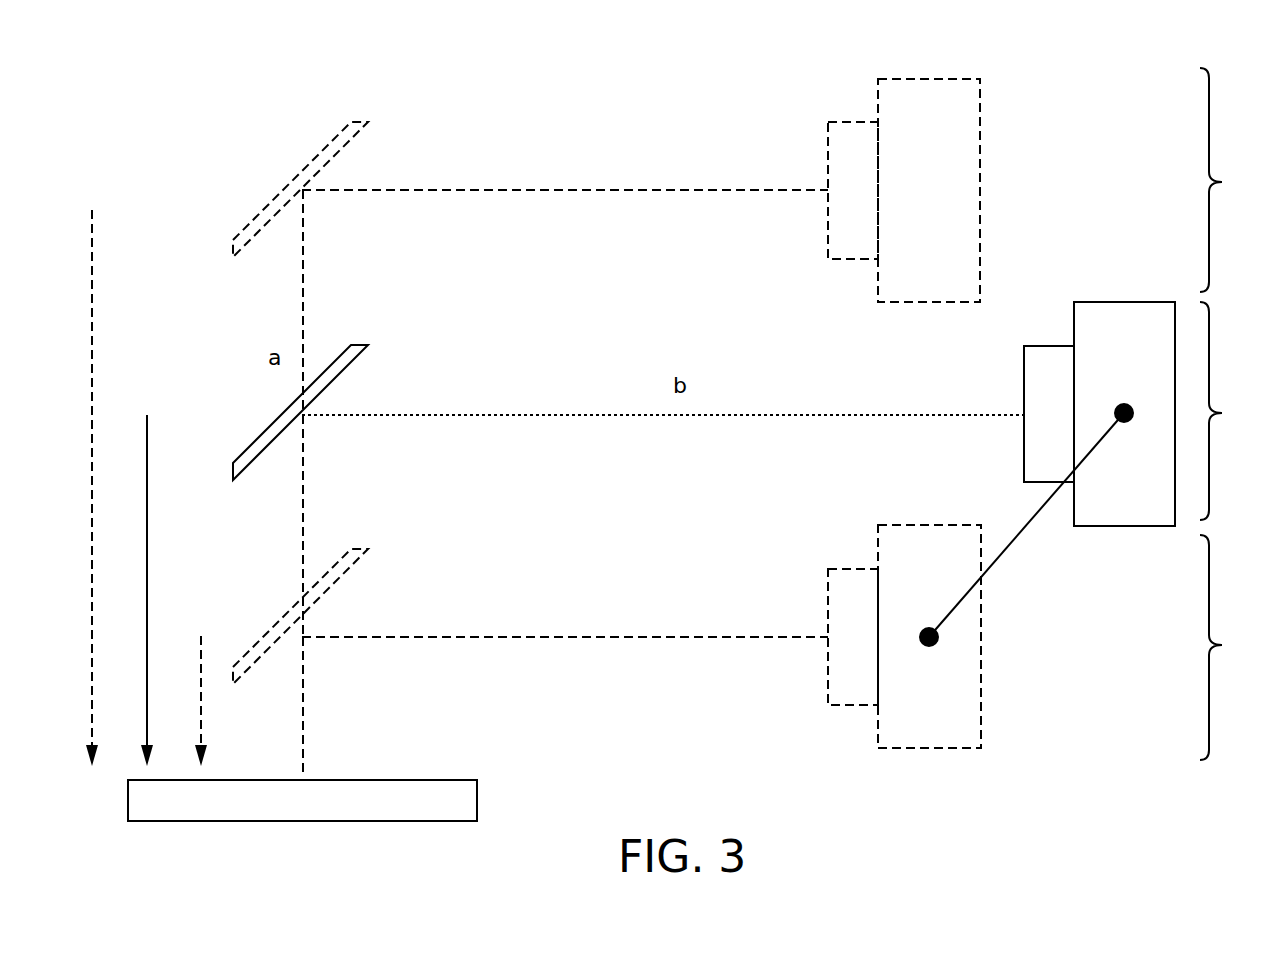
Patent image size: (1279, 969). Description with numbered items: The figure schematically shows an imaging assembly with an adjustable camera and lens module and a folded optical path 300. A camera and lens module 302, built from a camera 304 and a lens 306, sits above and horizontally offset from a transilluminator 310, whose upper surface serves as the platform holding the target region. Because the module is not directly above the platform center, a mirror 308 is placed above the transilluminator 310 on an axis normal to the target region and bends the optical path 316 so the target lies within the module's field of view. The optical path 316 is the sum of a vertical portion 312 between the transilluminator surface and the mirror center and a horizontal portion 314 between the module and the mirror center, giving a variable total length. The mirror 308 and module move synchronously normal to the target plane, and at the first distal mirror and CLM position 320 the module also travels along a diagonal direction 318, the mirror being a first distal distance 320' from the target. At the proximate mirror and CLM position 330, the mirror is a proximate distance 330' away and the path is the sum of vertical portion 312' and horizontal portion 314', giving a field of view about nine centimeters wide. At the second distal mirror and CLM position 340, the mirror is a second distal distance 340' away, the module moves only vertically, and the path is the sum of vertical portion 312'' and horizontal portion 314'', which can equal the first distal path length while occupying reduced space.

The imaging assembly with an adjustable camera and lens module and a folded optical 300 is at (664, 77).
The camera and lens module 302 is at (1110, 302).
The camera 304 is at (1086, 330).
The lens 306 is at (1035, 388).
The mirror 308 is at (262, 437).
The transilluminator 310 is at (477, 800).
The vertical portion of the optical path 312 is at (365, 526).
The vertical portion of the optical path 312' is at (345, 706).
The vertical portion of the optical path 312'' is at (346, 302).
The horizontal portion of the optical path 314 is at (663, 383).
The horizontal portion of the optical path 314' is at (565, 604).
The horizontal portion of the optical path 314'' is at (565, 159).
The optical path 316 is at (377, 418).
The diagonal direction 318 is at (1013, 543).
The first distal mirror and CLM position 320 is at (1234, 411).
The first distal distance 320' is at (184, 590).
The proximate mirror and CLM position 330 is at (1048, 642).
The proximate distance 330' is at (240, 676).
The second distal mirror and CLM position 340 is at (1048, 185).
The second distal distance 340' is at (130, 488).